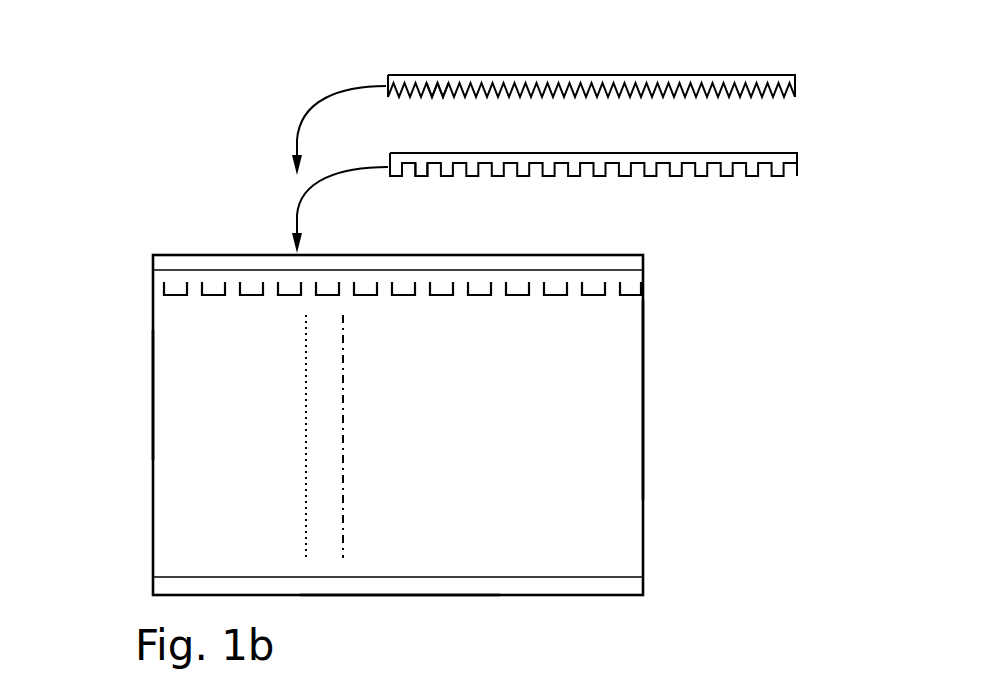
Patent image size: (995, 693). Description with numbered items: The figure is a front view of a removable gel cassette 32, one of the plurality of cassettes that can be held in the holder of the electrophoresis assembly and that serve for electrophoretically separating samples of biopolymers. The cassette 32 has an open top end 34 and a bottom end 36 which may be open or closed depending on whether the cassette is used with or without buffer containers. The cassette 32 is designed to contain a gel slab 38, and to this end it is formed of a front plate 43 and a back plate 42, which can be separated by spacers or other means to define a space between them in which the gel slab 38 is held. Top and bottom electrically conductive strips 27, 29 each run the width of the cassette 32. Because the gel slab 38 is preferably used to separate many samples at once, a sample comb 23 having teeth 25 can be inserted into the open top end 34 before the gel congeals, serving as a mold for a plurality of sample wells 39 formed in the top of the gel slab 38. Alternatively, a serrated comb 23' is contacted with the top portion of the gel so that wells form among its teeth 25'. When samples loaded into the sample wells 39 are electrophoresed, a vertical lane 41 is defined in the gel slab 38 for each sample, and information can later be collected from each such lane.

The serrated comb 23' is at (641, 77).
The teeth 25' is at (395, 113).
The sample comb 23 is at (639, 158).
The teeth 25 is at (397, 201).
The open top end 34 is at (437, 240).
The top electrically conductive strip 27 is at (583, 256).
The sample wells 39 is at (628, 278).
The vertical lane 41 is at (318, 437).
The front plate 43 is at (645, 400).
The gel slab 38 is at (635, 482).
The back plate 42 is at (664, 548).
The bottom electrically conductive strip 29 is at (618, 600).
The bottom end 36 is at (412, 616).
The gel cassette 32 is at (96, 409).